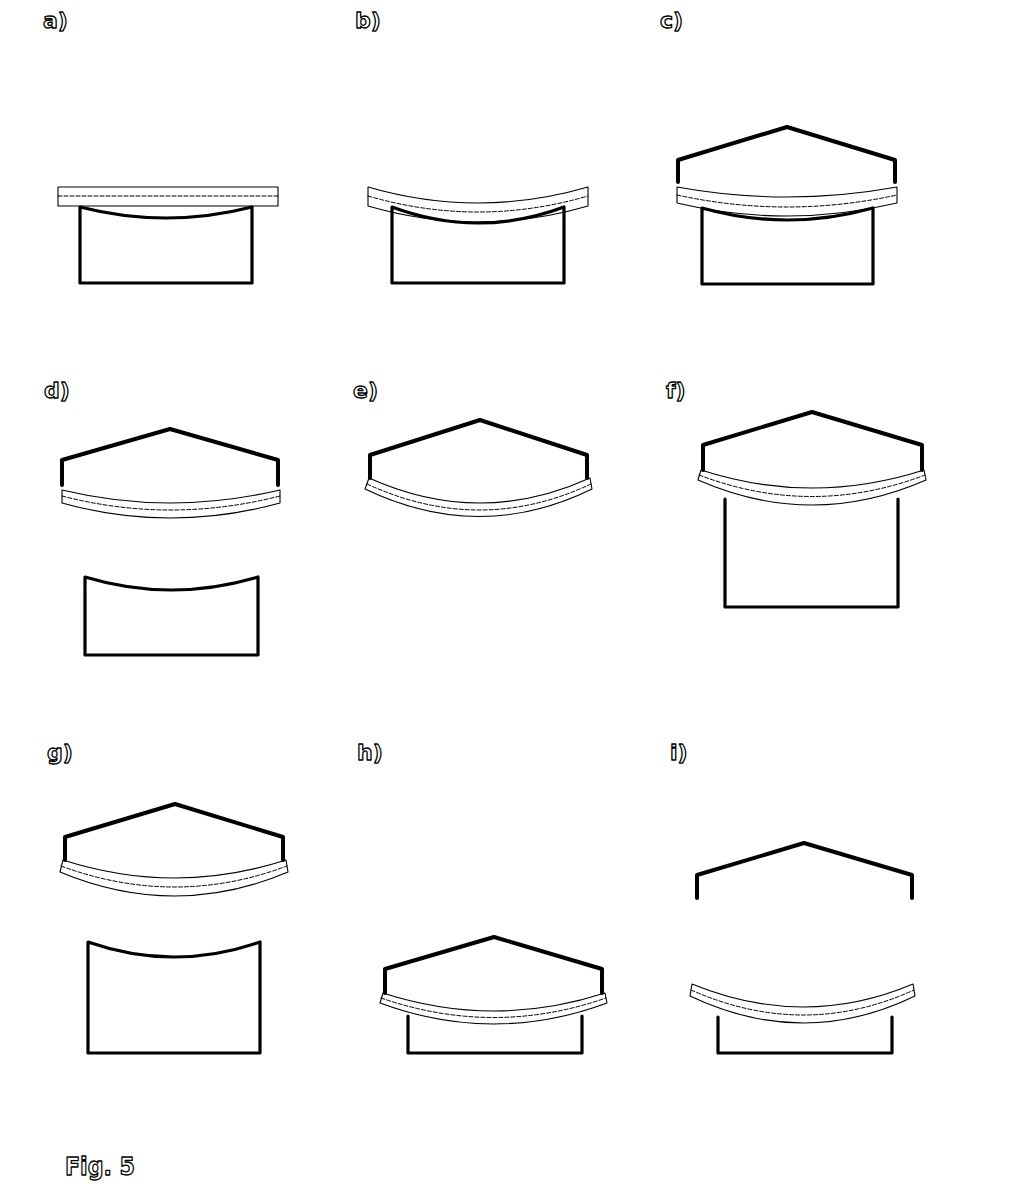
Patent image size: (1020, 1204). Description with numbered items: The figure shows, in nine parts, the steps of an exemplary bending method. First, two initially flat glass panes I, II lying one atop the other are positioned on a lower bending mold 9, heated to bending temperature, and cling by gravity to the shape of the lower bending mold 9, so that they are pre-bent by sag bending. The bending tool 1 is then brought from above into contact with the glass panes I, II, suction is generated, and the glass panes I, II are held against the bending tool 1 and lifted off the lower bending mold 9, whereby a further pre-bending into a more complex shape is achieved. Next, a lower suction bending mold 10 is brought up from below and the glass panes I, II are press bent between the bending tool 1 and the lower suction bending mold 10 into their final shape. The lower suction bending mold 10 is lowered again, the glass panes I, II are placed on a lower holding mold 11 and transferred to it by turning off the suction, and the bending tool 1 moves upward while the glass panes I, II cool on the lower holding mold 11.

The bending tool 1 is at (797, 145).
The lower bending mold 9 is at (236, 264).
The lower suction bending mold 10 is at (750, 553).
The lower holding mold 11 is at (432, 1043).
The glass pane I is at (168, 193).
The glass pane II is at (190, 200).